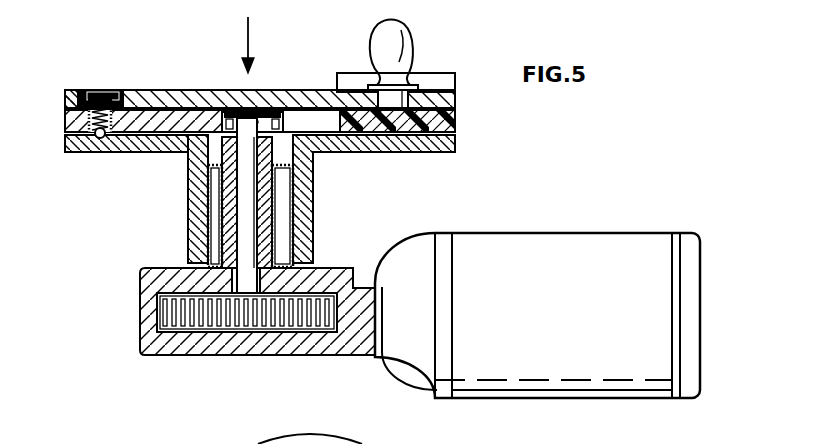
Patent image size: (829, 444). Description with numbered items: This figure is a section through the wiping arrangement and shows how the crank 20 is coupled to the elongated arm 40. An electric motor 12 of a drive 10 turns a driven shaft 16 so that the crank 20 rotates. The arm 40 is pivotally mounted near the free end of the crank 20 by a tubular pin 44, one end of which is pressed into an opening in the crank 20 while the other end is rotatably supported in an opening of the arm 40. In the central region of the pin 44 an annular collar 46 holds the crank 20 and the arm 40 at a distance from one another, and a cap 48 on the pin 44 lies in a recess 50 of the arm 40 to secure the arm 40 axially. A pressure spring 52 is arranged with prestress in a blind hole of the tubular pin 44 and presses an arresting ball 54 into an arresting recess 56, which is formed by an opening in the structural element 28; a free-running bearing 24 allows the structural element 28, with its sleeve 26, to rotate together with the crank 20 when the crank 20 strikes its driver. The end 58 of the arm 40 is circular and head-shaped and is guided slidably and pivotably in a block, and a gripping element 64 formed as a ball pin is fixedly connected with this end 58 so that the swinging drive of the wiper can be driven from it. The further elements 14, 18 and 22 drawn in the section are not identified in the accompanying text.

The drive 10 is at (450, 218).
The electric motor 12 is at (530, 243).
The ribbed retaining element 14 is at (217, 318).
The driven shaft 16 is at (247, 257).
The base 18 is at (152, 282).
The crank 20 is at (150, 120).
The inner sleeve 22 is at (273, 218).
The free-running bearing 24 is at (218, 228).
The sleeve 26 is at (300, 183).
The structural element 28 is at (183, 152).
The arm 40 is at (212, 98).
The tubular pin 44 is at (122, 152).
The annular collar 46 is at (65, 88).
The cap 48 is at (103, 88).
The recess 50 is at (118, 91).
The pressure spring 52 is at (91, 88).
The arresting ball 54 is at (82, 152).
The arresting recess 56 is at (100, 152).
The end of the arm 58 is at (445, 100).
The gripping element 64 is at (398, 43).